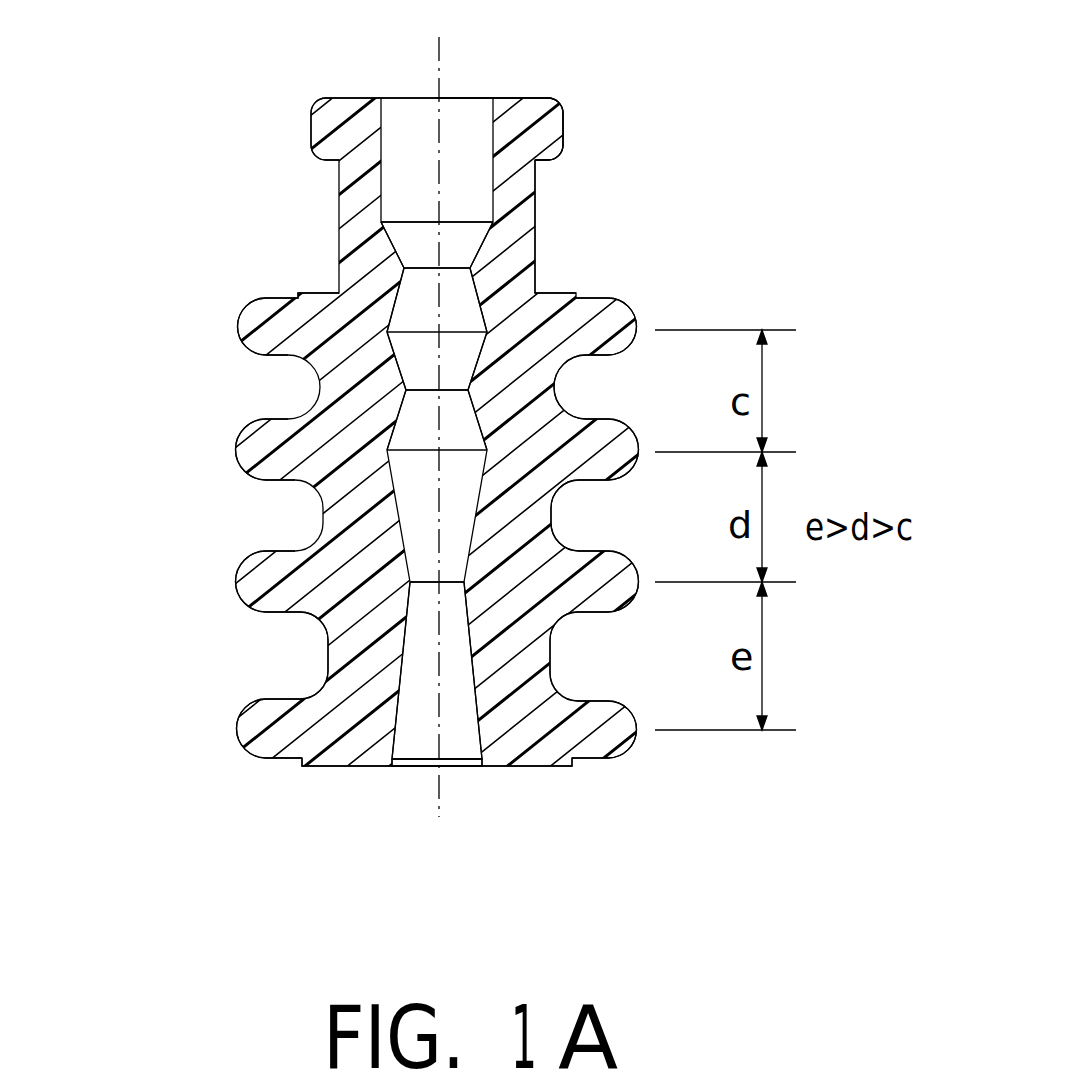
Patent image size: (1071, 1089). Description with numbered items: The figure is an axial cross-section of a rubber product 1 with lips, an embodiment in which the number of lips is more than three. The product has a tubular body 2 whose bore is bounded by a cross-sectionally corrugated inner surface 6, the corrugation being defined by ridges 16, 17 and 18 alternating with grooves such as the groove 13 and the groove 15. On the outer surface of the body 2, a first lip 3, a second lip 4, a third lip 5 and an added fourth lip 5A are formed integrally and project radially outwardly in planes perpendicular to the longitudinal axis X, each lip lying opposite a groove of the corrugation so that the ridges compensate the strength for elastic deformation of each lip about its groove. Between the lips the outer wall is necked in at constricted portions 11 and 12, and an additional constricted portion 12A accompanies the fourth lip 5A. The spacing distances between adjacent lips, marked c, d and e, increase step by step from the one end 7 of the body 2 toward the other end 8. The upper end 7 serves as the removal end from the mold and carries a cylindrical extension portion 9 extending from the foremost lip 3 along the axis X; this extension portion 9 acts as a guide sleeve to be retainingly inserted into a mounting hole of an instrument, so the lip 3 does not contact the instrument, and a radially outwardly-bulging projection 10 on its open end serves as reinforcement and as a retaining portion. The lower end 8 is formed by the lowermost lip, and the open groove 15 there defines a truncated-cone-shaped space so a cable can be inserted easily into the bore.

The rubber product with lips 1 is at (713, 285).
The tubular body 2 is at (577, 743).
The lip 3 is at (243, 305).
The lip 4 is at (237, 462).
The lip 5 is at (237, 582).
The fourth lip 5A is at (258, 722).
The corrugated inner surface 6 is at (423, 742).
The one end (upper end) 7 is at (552, 122).
The other end (lower end) 8 is at (327, 765).
The cylindrical extension portion 9 is at (535, 230).
The radially outwardly-bulging projection 10 is at (313, 120).
The first annular groove (right) 11 is at (565, 383).
The second annular groove 12 is at (557, 517).
The constricted portion 12A is at (555, 663).
The groove 13 is at (478, 268).
The groove 15 is at (468, 765).
The ridge 16 is at (404, 267).
The ridge 17 is at (421, 393).
The ridge 18 is at (327, 643).